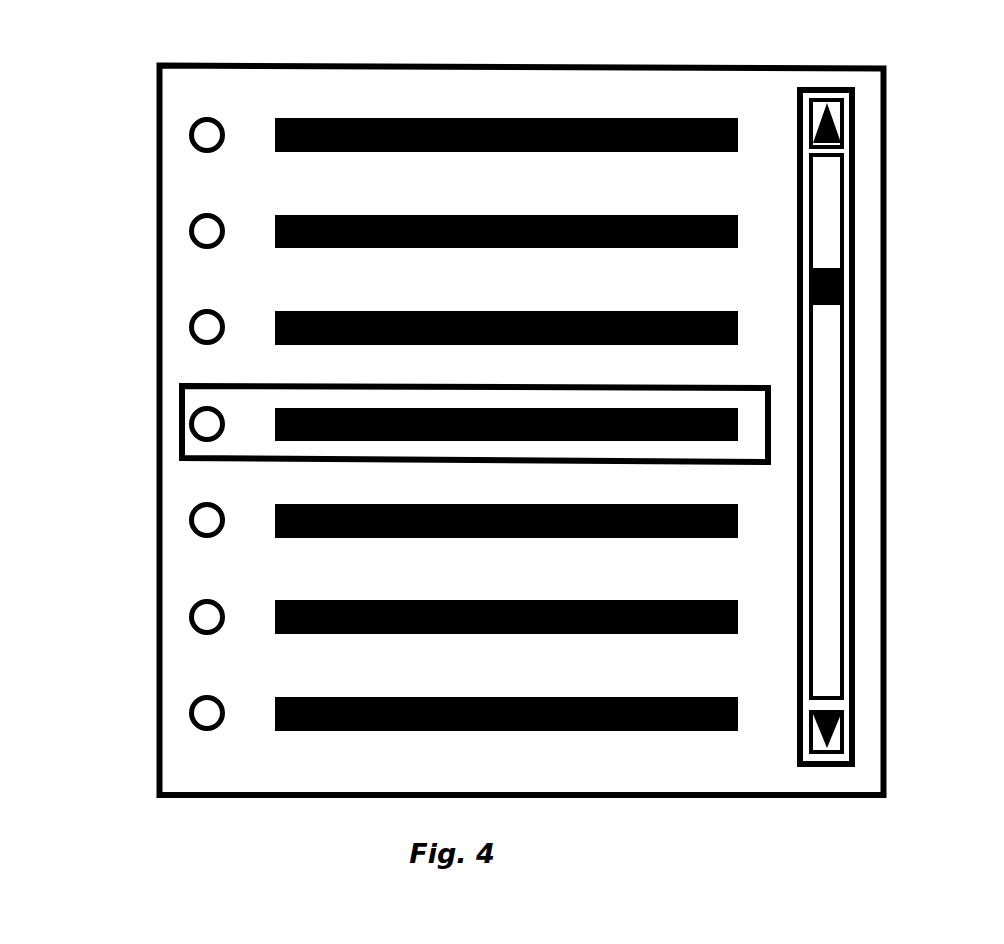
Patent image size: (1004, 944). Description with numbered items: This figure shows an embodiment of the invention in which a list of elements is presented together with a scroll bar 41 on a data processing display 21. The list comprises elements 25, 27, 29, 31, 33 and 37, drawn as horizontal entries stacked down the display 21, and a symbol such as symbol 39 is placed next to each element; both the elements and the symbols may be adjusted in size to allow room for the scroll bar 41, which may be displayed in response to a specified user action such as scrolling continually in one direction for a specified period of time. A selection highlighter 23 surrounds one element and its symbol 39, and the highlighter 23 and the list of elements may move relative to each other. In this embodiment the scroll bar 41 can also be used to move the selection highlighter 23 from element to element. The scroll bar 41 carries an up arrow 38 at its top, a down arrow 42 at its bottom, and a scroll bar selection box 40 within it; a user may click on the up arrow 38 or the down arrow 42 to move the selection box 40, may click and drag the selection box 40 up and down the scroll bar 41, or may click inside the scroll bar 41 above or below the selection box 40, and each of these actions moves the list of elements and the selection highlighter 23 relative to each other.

The data processing display 21 is at (862, 358).
The selection highlighter 23 is at (771, 444).
The element of the list 25 is at (653, 120).
The element of the list 27 is at (738, 225).
The element of the list 29 is at (738, 327).
The element of the list 31 is at (738, 422).
The element of the list 33 is at (738, 521).
The element of the list 37 is at (738, 710).
The up arrow 38 is at (827, 113).
The symbol 39 is at (205, 428).
The scroll bar selection box 40 is at (842, 283).
The scroll bar 41 is at (838, 401).
The down arrow 42 is at (827, 742).